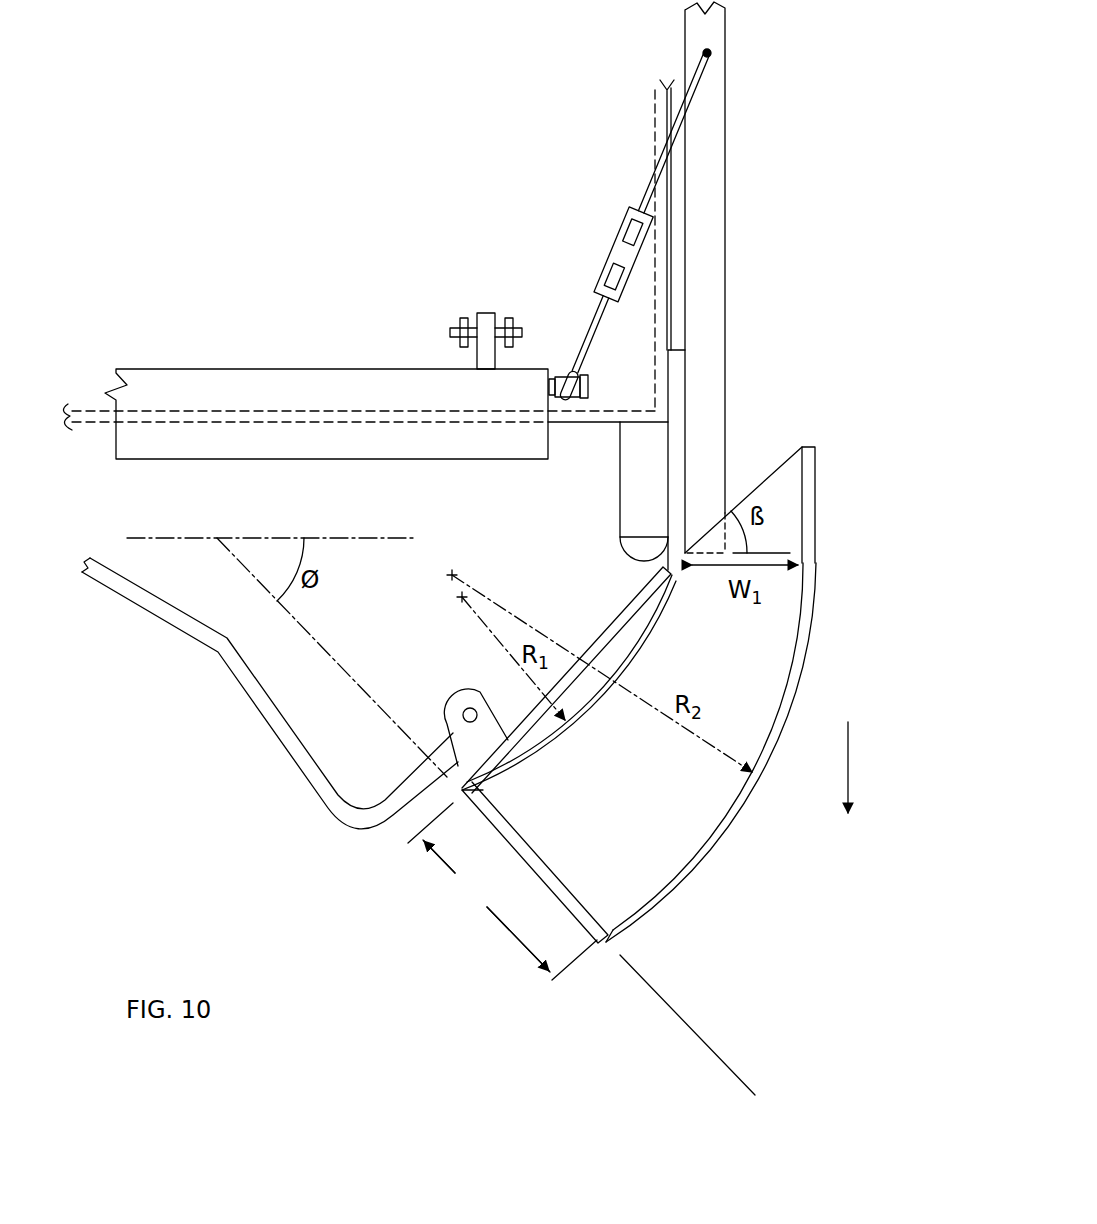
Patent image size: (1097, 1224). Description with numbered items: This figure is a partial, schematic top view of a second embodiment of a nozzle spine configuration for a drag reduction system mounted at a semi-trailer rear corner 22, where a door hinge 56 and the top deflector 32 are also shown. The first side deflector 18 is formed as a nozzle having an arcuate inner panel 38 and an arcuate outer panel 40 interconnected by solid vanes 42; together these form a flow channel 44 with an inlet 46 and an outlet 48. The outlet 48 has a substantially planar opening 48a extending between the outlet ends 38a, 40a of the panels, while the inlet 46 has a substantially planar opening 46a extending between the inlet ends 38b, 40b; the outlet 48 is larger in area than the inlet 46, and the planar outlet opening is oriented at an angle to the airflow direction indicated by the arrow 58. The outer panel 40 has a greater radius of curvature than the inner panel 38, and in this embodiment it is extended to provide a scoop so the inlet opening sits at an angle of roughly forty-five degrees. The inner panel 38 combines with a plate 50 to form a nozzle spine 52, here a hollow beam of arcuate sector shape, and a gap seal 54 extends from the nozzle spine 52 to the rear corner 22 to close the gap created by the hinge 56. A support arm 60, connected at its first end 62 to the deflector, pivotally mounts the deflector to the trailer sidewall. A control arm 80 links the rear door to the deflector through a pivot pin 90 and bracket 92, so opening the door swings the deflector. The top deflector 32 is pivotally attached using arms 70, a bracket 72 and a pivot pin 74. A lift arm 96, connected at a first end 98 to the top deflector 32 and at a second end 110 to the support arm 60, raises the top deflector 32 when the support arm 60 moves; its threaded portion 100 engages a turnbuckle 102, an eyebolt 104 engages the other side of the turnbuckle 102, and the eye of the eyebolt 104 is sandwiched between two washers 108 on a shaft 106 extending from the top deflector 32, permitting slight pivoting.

The first side deflector 18 is at (835, 643).
The rear corner 22 is at (664, 348).
The top deflector 32 is at (322, 382).
The inner panel 38 is at (550, 740).
The outlet end of inner panel 38a is at (482, 790).
The inlet end of inner panel 38b is at (684, 576).
The outer panel 40 is at (712, 853).
The outlet end of outer panel 40a is at (617, 936).
The inlet end of outer panel 40b is at (810, 447).
The vanes 42 is at (790, 522).
The flow channel 44 is at (640, 782).
The inlet 46 is at (752, 466).
The substantially planar opening of inlet 46a is at (786, 458).
The outlet 48 is at (510, 933).
The substantially planar opening of outlet 48a is at (535, 873).
The plate 50 is at (615, 615).
The nozzle spine 52 is at (577, 632).
The gap seal 54 is at (682, 422).
The door hinge 56 is at (640, 498).
The arrow 58 is at (865, 767).
The support arm 60 is at (720, 237).
The first end of support arm 62 is at (715, 367).
The arm 70 is at (486, 313).
The bracket 72 is at (463, 322).
The pivot pin 74 is at (452, 333).
The control arm 80 is at (253, 705).
The pivot pin 90 is at (470, 707).
The bracket 92 is at (447, 715).
The lift arm 96 is at (647, 185).
The first end of lift arm 98 is at (585, 342).
The threaded portion 100 is at (620, 230).
The turnbuckle 102 is at (597, 285).
The eyebolt 104 is at (558, 372).
The shaft 106 is at (588, 377).
The washers 108 is at (588, 398).
The second end of lift arm 110 is at (700, 67).